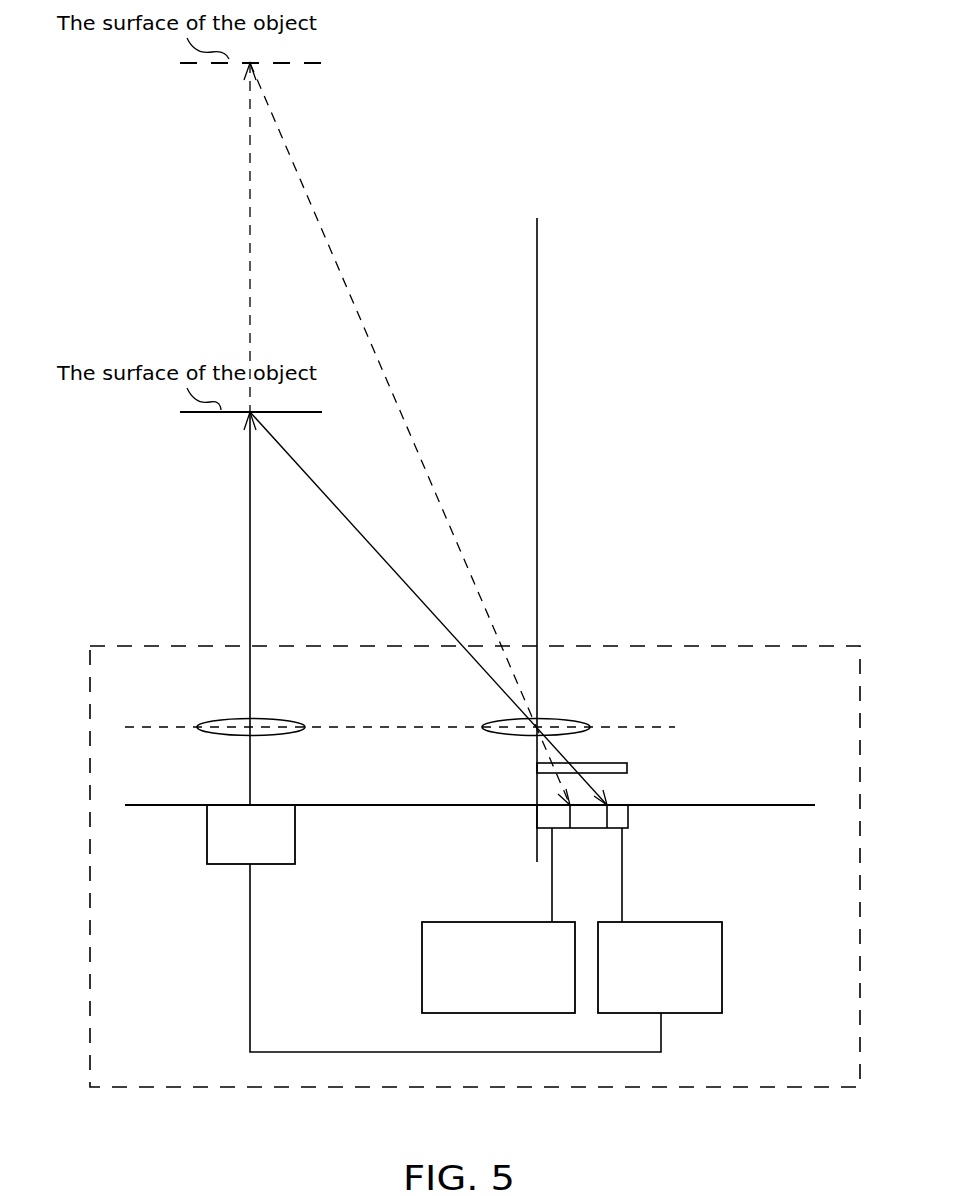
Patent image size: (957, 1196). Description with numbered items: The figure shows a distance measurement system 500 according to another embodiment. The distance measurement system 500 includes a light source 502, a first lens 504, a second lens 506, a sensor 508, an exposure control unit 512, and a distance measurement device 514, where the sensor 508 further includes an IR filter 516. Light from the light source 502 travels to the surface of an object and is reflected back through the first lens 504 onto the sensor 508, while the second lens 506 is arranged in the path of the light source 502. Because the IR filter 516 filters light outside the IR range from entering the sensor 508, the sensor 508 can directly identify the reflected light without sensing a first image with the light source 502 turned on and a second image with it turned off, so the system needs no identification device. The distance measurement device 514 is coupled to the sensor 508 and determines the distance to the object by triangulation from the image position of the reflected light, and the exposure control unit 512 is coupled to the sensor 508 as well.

The distance measurement system 500 is at (725, 631).
The light source 502 is at (297, 833).
The first lens 504 is at (560, 718).
The second lens 506 is at (277, 718).
The sensor 508 is at (631, 818).
The exposure control unit 512 is at (688, 922).
The distance measurement device 514 is at (473, 922).
The IR filter 516 is at (629, 768).